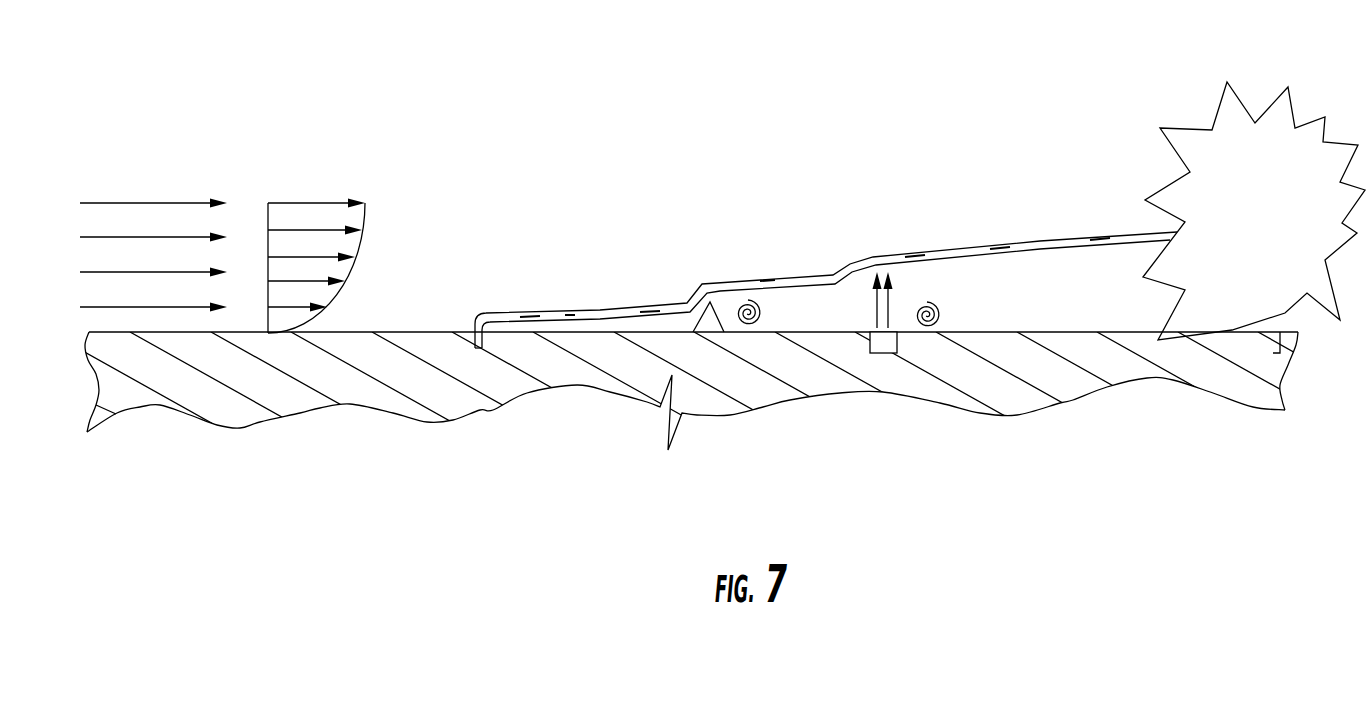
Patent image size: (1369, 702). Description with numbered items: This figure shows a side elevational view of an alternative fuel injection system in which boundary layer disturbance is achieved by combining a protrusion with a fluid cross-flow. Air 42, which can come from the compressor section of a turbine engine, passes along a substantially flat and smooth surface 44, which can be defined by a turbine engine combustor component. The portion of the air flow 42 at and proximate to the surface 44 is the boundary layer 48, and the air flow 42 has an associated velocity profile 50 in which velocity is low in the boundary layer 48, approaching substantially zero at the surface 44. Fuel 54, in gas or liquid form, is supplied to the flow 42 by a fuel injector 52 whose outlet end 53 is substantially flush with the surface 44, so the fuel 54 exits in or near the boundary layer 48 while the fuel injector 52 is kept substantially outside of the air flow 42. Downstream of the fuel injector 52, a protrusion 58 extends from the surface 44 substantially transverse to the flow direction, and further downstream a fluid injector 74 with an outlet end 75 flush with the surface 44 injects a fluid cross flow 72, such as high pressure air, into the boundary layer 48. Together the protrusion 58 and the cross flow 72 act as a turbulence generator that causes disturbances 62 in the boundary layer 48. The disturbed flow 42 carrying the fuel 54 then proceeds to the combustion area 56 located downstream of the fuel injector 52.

The air flow 42 is at (148, 203).
The surface 44 is at (345, 333).
The boundary layer 48 is at (251, 302).
The velocity profile 50 is at (367, 172).
The fuel injector 52 is at (480, 350).
The outlet end 53 is at (475, 325).
The fuel 54 is at (604, 308).
The combustion area 56 is at (1232, 123).
The protrusion 58 is at (718, 328).
The disturbances 62 is at (758, 325).
The fluid cross flow 72 is at (892, 313).
The fluid injector 74 is at (883, 353).
The outlet end 75 is at (873, 325).